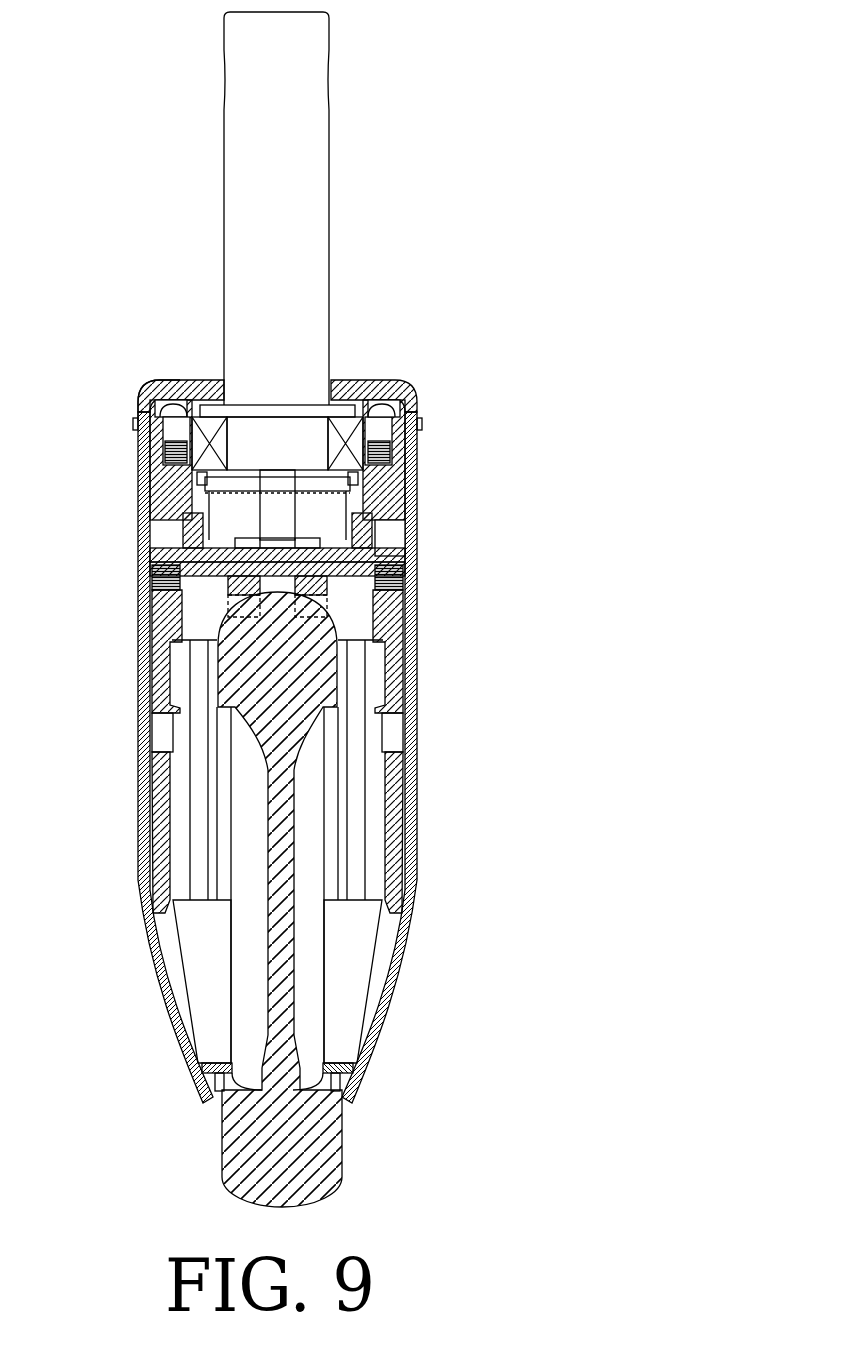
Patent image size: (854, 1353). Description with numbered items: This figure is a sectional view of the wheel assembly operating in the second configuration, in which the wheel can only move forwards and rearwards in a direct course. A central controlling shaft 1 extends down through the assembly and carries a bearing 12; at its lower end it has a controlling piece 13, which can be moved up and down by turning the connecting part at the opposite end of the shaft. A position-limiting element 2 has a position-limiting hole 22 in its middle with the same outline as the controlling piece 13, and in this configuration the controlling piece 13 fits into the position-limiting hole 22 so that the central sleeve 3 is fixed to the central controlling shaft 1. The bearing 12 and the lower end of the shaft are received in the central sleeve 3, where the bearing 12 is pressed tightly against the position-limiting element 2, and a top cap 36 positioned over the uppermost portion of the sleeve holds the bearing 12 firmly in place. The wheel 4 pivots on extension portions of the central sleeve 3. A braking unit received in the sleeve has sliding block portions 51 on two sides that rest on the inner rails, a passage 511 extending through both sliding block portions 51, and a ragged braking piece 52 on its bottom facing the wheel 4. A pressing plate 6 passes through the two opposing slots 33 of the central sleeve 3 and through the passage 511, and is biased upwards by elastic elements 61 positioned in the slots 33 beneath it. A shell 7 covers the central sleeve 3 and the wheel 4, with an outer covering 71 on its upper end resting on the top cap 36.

The central controlling shaft 1 is at (293, 148).
The position-limiting element 2 is at (405, 460).
The central sleeve 3 is at (400, 497).
The wheel 4 is at (325, 1145).
The pressing plate 6 is at (150, 545).
The shell 7 is at (410, 655).
The bearing 12 is at (200, 405).
The controlling piece 13 is at (140, 395).
The position-limiting hole 22 is at (307, 470).
The slots 33 is at (395, 537).
The top cap 36 is at (415, 410).
The sliding block portions 51 is at (197, 512).
The ragged braking piece 52 is at (270, 594).
The elastic elements 61 is at (400, 593).
The outer covering 71 is at (372, 395).
The passage 511 is at (335, 575).